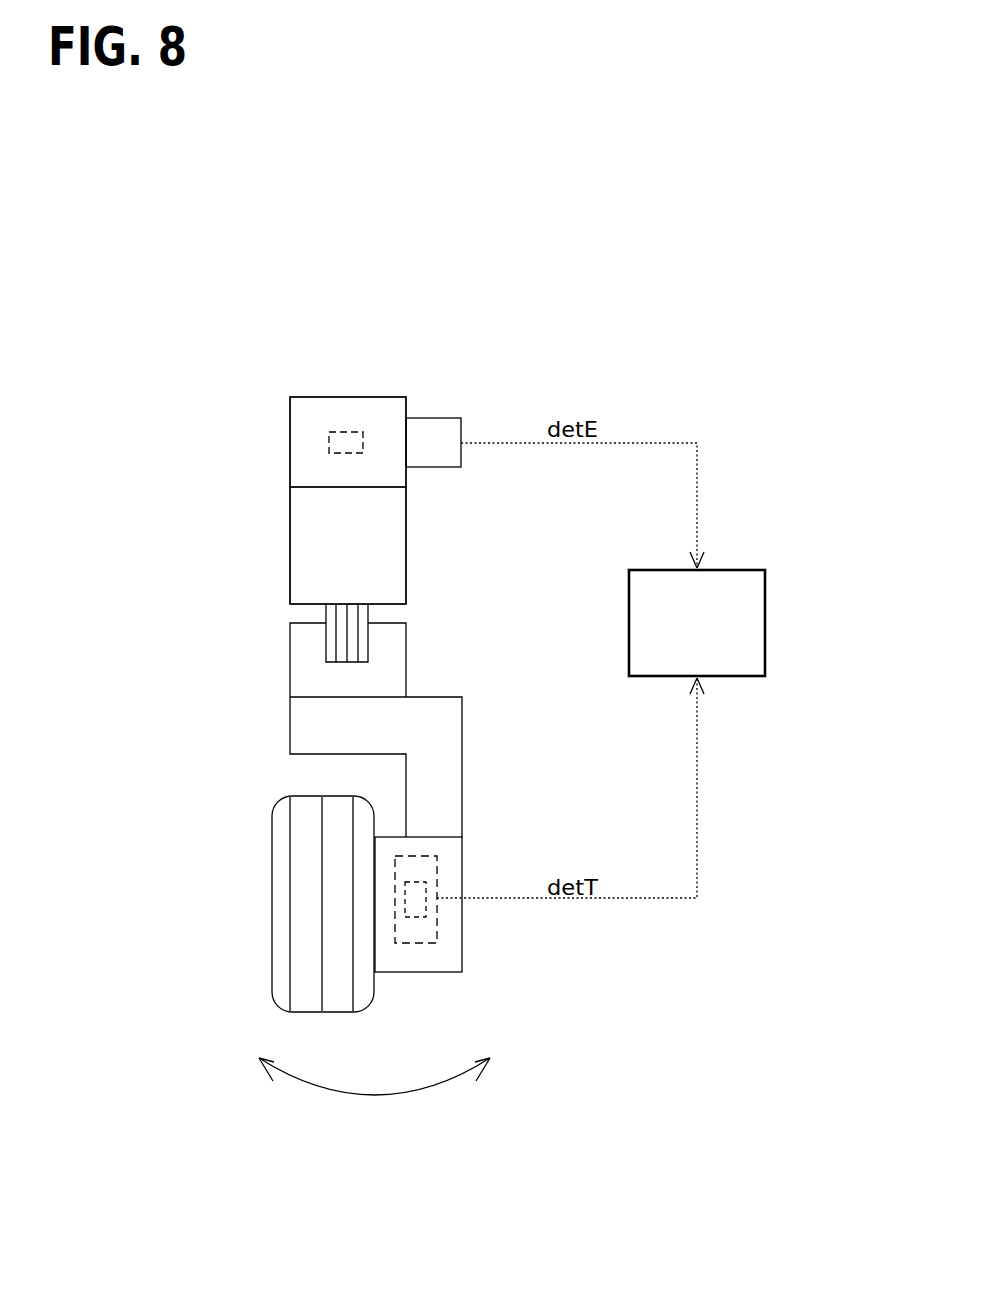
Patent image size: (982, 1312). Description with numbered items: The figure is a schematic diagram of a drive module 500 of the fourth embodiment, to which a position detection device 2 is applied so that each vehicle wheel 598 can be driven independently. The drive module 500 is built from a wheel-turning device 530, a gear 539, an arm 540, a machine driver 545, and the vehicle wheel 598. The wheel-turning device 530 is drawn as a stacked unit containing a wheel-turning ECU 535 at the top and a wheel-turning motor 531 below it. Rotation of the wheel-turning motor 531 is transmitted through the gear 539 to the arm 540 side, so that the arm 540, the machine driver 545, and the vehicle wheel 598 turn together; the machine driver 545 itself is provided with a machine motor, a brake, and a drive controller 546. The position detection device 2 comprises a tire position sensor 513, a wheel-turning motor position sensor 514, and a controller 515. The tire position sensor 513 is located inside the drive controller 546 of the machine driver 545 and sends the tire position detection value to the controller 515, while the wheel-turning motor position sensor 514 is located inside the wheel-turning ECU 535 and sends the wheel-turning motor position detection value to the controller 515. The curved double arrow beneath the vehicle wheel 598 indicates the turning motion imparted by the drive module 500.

The position detection device 2 is at (809, 668).
The drive module 500 is at (292, 1120).
The tire position sensor 513 is at (417, 918).
The wheel-turning motor position sensor 514 is at (328, 440).
The controller 515 is at (766, 600).
The wheel-turning device 530 is at (420, 397).
The wheel-turning motor 531 is at (306, 580).
The wheel-turning ECU 535 is at (308, 417).
The gear 539 is at (362, 615).
The arm 540 is at (444, 736).
The machine driver 545 is at (448, 951).
The drive controller 546 is at (438, 872).
The vehicle wheel 598 is at (271, 941).